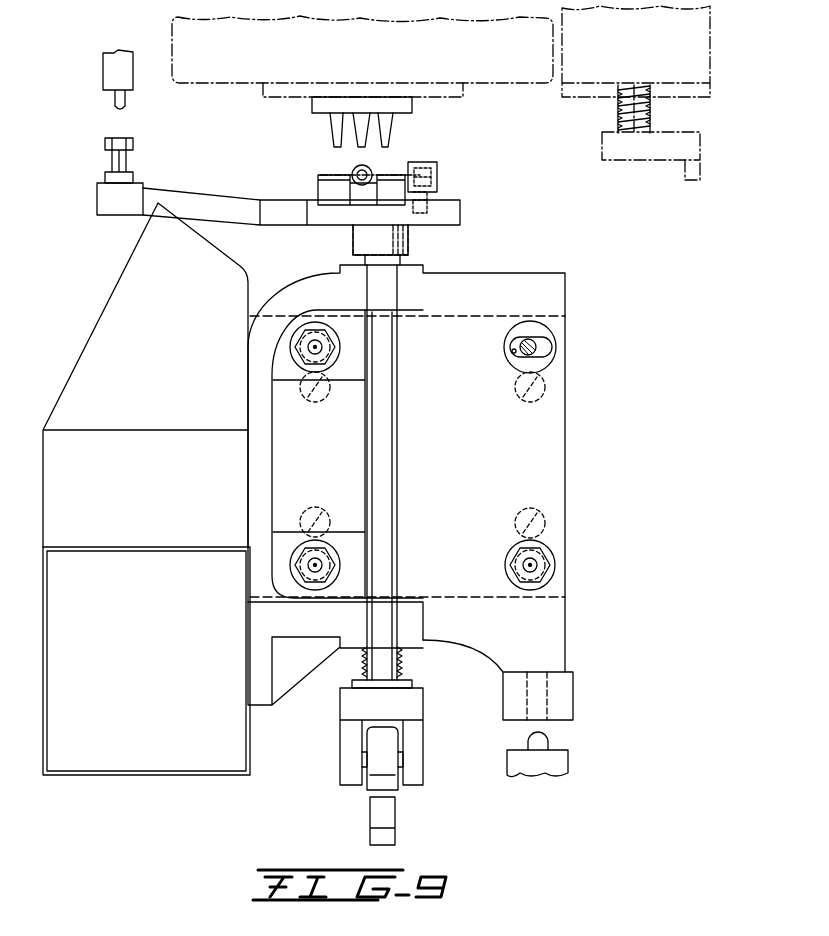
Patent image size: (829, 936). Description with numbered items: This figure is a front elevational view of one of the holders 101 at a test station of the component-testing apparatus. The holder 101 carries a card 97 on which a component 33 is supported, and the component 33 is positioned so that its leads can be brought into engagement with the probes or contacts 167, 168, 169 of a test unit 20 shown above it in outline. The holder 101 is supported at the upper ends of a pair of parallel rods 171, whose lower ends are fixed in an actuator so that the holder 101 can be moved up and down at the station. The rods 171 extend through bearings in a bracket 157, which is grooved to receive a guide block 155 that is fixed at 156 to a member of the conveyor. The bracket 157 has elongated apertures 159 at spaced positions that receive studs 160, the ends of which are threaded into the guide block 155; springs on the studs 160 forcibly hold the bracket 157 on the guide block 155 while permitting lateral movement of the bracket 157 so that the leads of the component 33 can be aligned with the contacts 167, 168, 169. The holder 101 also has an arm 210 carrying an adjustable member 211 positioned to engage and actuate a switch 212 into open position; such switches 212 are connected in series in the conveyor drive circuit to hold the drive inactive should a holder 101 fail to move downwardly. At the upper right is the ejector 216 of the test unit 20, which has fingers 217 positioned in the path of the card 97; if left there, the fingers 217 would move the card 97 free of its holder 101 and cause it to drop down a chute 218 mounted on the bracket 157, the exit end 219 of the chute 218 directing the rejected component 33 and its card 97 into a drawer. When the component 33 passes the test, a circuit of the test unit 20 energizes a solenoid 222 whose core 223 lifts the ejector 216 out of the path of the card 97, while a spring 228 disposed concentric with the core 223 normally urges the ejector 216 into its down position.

The test unit 20 is at (228, 82).
The component 33 is at (378, 165).
The card 97 is at (346, 175).
The holder 101 is at (463, 210).
The guide block 155 is at (490, 315).
The fixing point of guide block 156 is at (527, 397).
The bracket 157 is at (567, 531).
The elongated apertures 159 is at (519, 355).
The studs 160 is at (512, 346).
The probe or contact 167 is at (329, 133).
The probe or contact 168 is at (358, 143).
The probe or contact 169 is at (392, 135).
The parallel rods 171 is at (399, 478).
The arm 210 is at (97, 207).
The adjustable member 211 is at (103, 143).
The switch 212 is at (102, 77).
The ejector 216 is at (701, 146).
The fingers 217 is at (685, 178).
The chute 218 is at (80, 361).
The exit end 219 is at (88, 765).
The solenoid 222 is at (712, 60).
The core 223 is at (652, 112).
The spring 228 is at (618, 108).